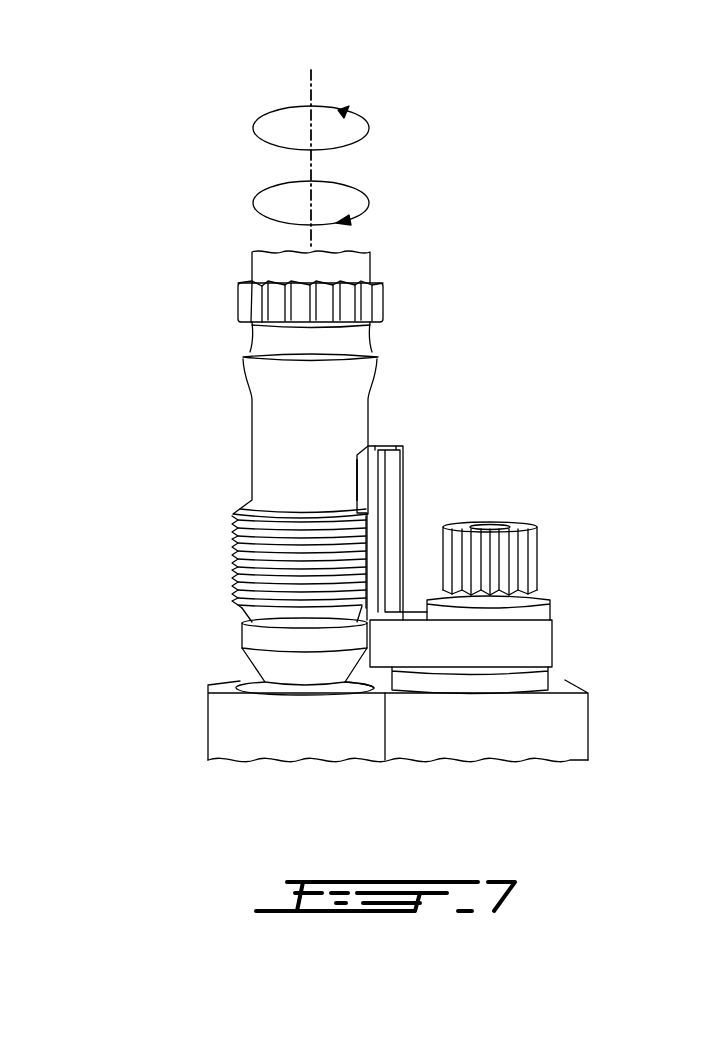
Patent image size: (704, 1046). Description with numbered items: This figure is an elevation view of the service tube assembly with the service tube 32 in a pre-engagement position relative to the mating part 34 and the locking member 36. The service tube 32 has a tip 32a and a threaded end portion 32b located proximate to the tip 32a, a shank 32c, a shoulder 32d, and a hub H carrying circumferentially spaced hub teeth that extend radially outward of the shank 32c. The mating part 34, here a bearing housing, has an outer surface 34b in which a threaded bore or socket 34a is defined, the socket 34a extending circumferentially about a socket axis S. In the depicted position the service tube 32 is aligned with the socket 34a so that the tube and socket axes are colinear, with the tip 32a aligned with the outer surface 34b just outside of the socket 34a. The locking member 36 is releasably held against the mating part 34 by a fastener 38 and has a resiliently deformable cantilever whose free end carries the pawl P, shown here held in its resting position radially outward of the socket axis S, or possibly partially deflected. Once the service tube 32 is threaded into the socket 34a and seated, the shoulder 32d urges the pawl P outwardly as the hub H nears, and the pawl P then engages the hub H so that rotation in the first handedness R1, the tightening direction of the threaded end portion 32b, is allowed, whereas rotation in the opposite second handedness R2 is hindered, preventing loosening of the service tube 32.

The service tube 32 is at (128, 407).
The tip 32a is at (270, 663).
The threaded end portion 32b is at (235, 558).
The shank 32c is at (252, 445).
The shoulder 32d is at (250, 360).
The hub H is at (238, 301).
The mating part 34 is at (418, 753).
The threaded bore (socket) 34a is at (258, 688).
The outer surface 34b is at (364, 688).
The locking member 36 is at (451, 515).
The fastener 38 is at (548, 598).
The first handedness R1 is at (253, 203).
The second handedness R2 is at (253, 128).
The socket axis S is at (312, 73).
The pawl P is at (357, 470).